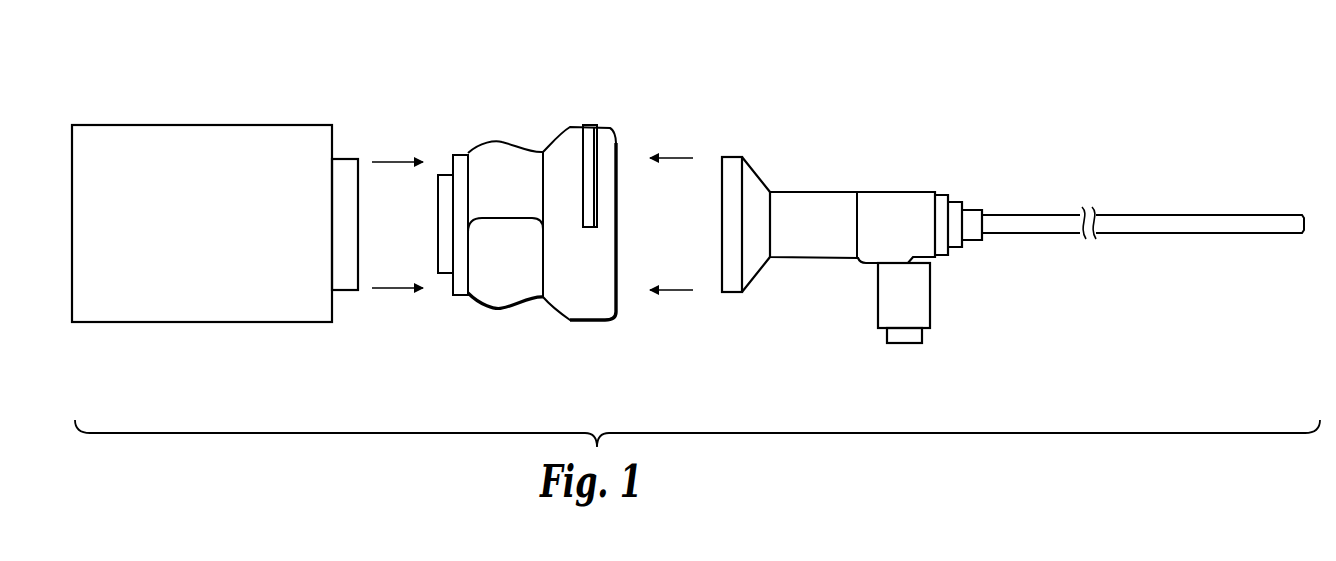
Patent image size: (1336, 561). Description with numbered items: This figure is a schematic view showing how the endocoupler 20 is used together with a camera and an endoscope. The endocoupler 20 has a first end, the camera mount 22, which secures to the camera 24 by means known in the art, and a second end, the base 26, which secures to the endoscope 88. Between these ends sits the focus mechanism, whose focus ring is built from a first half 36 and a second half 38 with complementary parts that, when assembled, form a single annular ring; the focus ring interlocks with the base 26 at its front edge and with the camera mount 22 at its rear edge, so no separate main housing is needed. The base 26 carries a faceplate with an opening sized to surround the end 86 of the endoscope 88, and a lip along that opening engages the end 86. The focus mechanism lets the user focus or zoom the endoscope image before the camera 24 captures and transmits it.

The endocoupler 20 is at (535, 215).
The camera mount 22 is at (439, 171).
The camera 24 is at (157, 148).
The base 26 is at (618, 160).
The first half 36 is at (505, 158).
The second half 38 is at (507, 288).
The end of endoscope 86 is at (732, 155).
The endoscope 88 is at (1013, 223).